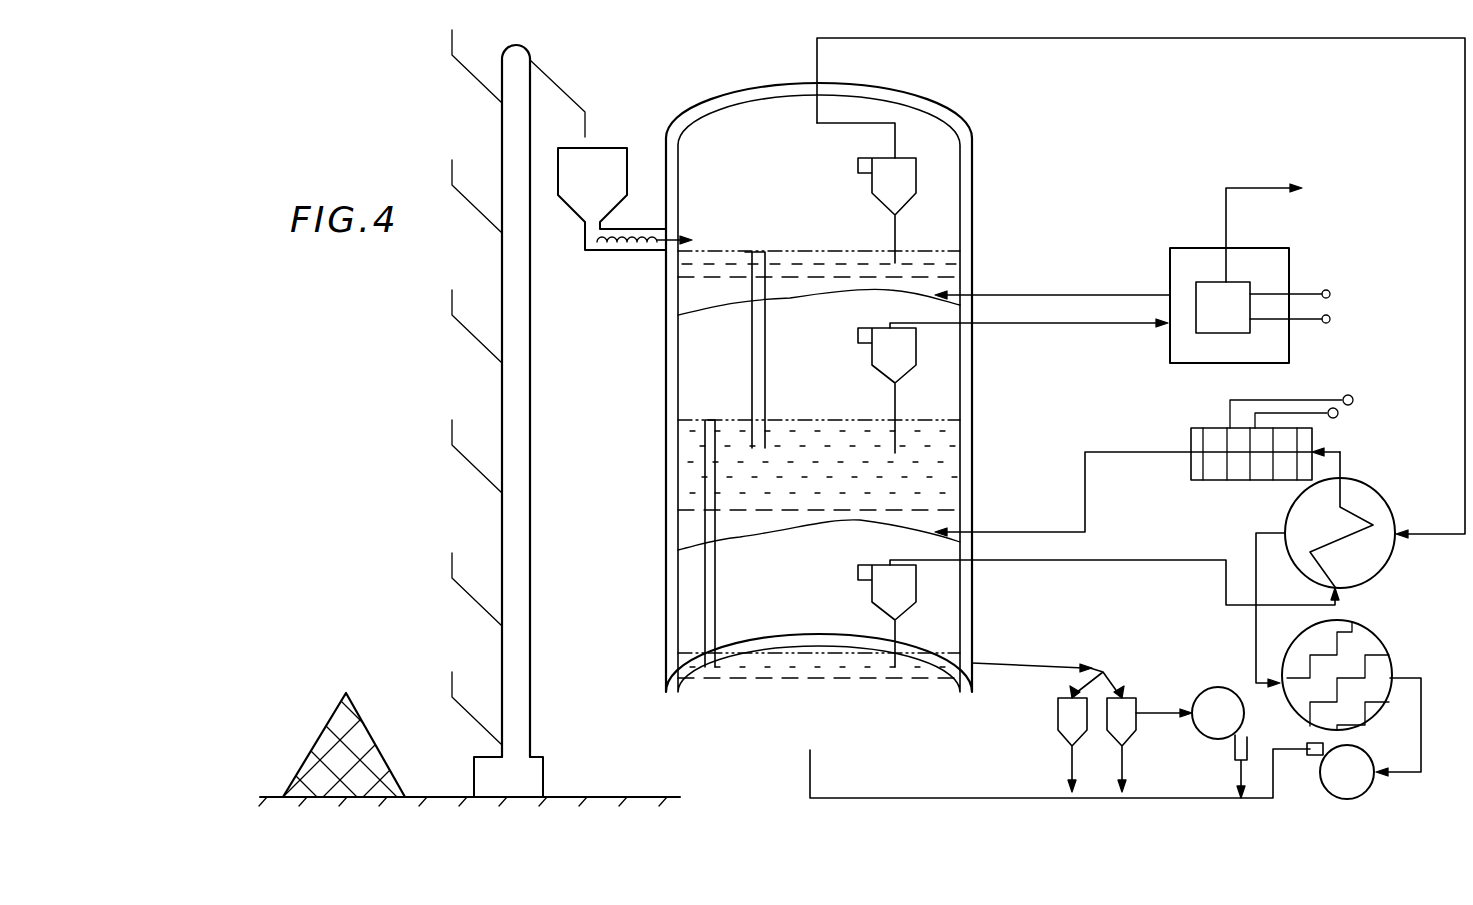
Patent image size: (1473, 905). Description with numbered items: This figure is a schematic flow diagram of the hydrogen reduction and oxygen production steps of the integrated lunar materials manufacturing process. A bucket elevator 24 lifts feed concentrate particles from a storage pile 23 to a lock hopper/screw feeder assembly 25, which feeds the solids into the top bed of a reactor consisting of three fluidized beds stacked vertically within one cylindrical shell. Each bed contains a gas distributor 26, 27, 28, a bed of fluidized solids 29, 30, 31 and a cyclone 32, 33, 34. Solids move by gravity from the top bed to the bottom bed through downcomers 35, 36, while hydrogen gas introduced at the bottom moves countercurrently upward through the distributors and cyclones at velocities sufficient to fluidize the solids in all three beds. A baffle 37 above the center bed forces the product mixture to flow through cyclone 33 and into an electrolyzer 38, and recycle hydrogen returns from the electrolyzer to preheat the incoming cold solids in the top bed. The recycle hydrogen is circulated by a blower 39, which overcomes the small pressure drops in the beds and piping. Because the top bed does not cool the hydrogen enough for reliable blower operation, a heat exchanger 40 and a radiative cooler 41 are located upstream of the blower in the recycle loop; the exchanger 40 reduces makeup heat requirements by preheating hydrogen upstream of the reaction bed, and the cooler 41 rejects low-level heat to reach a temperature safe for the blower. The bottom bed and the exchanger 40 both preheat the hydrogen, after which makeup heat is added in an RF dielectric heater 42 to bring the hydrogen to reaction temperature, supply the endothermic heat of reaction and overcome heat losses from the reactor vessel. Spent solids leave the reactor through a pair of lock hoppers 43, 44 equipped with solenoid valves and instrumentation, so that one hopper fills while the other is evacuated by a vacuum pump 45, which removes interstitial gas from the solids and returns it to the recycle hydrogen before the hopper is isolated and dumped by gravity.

The storage pile 23 is at (360, 742).
The bucket elevator 24 is at (530, 483).
The lock hopper/screw feeder assembly 25 is at (579, 183).
The gas distributor 26 is at (740, 275).
The gas distributor 27 is at (700, 512).
The gas distributor 28 is at (700, 680).
The bed of fluidized solids 29 is at (828, 655).
The bed of fluidized solids 30 is at (802, 487).
The bed of fluidized solids 31 is at (818, 262).
The cyclone 32 is at (886, 590).
The cyclone 33 is at (882, 350).
The cyclone 34 is at (916, 175).
The downcomer 35 is at (765, 360).
The downcomer 36 is at (715, 575).
The baffle 37 is at (810, 298).
The electrolyzer 38 is at (1210, 318).
The blower 39 is at (1334, 784).
The heat exchanger 40 is at (1395, 545).
The radiative cooler 41 is at (1385, 707).
The RF dielectric heater 42 is at (1191, 480).
The lock hopper 43 is at (1058, 720).
The lock hopper 44 is at (1136, 720).
The vacuum pump 45 is at (1205, 725).